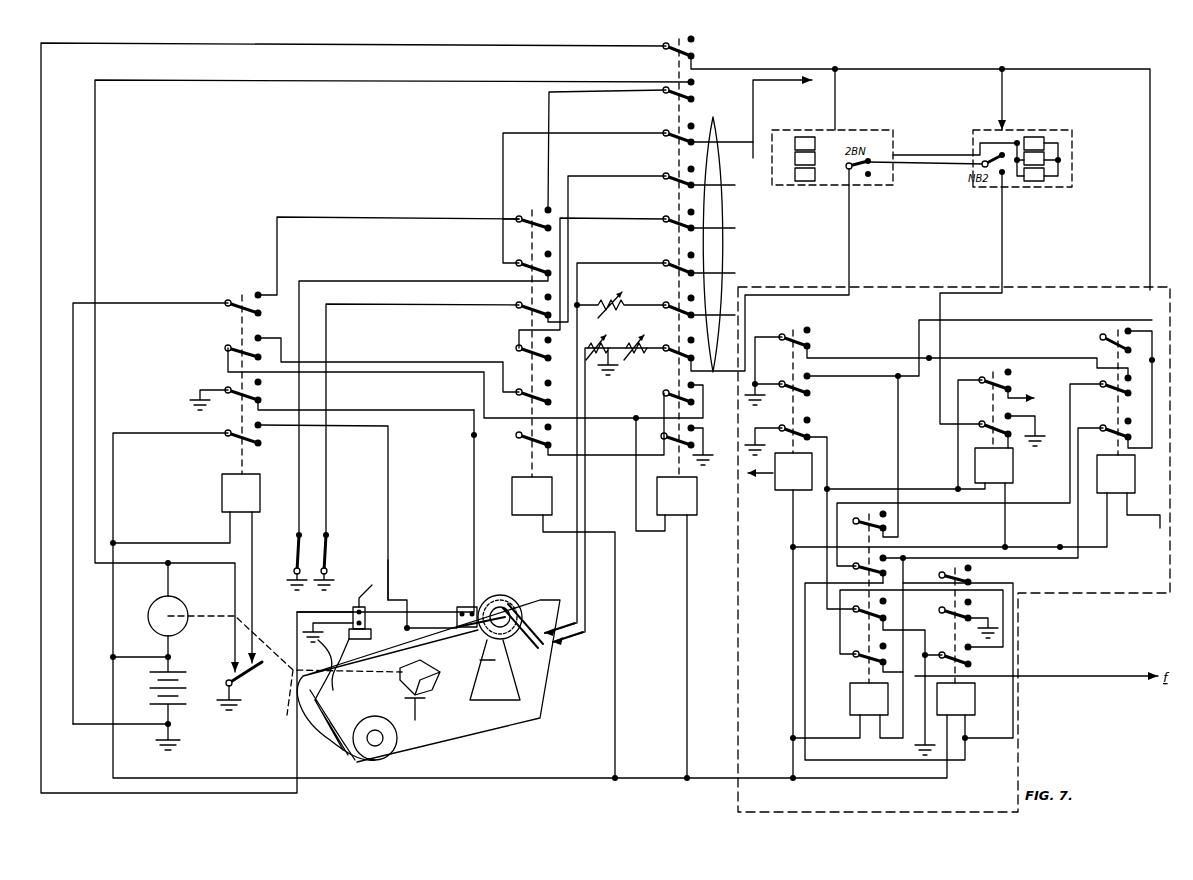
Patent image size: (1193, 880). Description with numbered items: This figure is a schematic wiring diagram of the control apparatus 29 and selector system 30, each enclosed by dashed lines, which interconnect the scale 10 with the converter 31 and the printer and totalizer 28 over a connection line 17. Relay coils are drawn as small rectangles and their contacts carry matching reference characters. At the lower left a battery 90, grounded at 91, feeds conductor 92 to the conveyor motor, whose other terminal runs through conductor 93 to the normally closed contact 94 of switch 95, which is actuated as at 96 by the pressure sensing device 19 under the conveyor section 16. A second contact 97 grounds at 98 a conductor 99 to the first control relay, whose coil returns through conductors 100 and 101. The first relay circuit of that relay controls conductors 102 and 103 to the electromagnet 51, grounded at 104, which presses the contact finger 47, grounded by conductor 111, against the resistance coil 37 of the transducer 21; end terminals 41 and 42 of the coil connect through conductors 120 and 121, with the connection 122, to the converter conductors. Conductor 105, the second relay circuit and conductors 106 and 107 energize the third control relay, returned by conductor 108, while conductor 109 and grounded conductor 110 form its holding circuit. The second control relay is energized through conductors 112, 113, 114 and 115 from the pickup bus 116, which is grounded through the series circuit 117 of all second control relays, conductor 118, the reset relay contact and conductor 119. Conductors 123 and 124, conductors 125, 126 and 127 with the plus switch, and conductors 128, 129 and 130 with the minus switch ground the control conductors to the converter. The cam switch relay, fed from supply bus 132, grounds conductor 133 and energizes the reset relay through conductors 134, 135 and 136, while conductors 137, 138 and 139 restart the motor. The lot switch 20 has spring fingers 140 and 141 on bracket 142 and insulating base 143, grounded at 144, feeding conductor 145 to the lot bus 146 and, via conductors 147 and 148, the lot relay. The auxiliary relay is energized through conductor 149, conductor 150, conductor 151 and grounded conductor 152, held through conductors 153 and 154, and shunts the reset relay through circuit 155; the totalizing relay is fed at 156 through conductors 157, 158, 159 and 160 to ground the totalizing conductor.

The scale 10 is at (515, 598).
The conveyor section 16 is at (330, 755).
The connection line 17 is at (935, 160).
The sensing device 19 is at (420, 696).
The lot switch 20 is at (365, 612).
The transducer 21 is at (530, 620).
The printer and totalizer 28 is at (832, 147).
The control apparatus 29 is at (1056, 288).
The selector system 30 is at (868, 185).
The converter 31 is at (791, 117).
The electrical resistance coil 37 is at (520, 602).
The end terminal 41 is at (495, 670).
The end terminal 42 is at (495, 630).
The contacting finger 47 is at (462, 638).
The electromagnet 51 is at (470, 600).
The battery 90 is at (190, 695).
The ground 91 is at (172, 735).
The conductor 92 is at (165, 650).
The conductor 93 is at (172, 580).
The normally closed contact 94 is at (230, 668).
The switch 95 is at (250, 690).
The actuating connection 96 is at (285, 671).
The second normally closed contact 97 is at (262, 640).
The ground 98 is at (240, 705).
The conductor 99 is at (255, 530).
The conductor 100 is at (200, 543).
The supply conductor 101 is at (113, 585).
The conductor 102 is at (115, 505).
The conductor 103 is at (372, 435).
The ground 104 is at (440, 626).
The conductor 105 is at (205, 388).
The conductor 106 is at (462, 408).
The conductor 107 is at (470, 448).
The conductor 108 is at (618, 622).
The conductor 109 is at (630, 455).
The conductor 110 is at (708, 440).
The conductor 111 is at (395, 595).
The conductor 112 is at (685, 692).
The conductor 113 is at (640, 535).
The conductor 114 is at (365, 345).
The conductor 115 is at (405, 372).
The pickup bus 116 is at (640, 405).
The series circuit 117 is at (810, 292).
The conductor 118 is at (955, 295).
The conductor 119 is at (1025, 451).
The conductor 120 is at (585, 505).
The conductor 121 is at (530, 470).
The connection 122 is at (617, 262).
The conductor 123 is at (590, 215).
The conductor 124 is at (605, 388).
The conductor 125 is at (620, 170).
The conductor 126 is at (465, 310).
The conductor 127 is at (328, 572).
The conductor 128 is at (637, 130).
The conductor 129 is at (385, 280).
The conductor 130 is at (295, 572).
The supply bus 132 is at (790, 712).
The conductor 133 is at (774, 409).
The conductor 134 is at (830, 462).
The conductor 135 is at (915, 468).
The conductor 136 is at (1045, 492).
The conductor 137 is at (423, 215).
The conductor 138 is at (632, 86).
The conductor 139 is at (458, 85).
The spring finger 140 is at (345, 651).
The spring finger 141 is at (370, 598).
The bracket 142 is at (381, 586).
The insulating base 143 is at (336, 670).
The ground 144 is at (335, 700).
The conductor 145 is at (43, 80).
The lot bus 146 is at (808, 62).
The conductor 147 is at (1160, 528).
The conductor 148 is at (1110, 550).
The conductor 149 is at (820, 735).
The conductor 150 is at (875, 636).
The conductor 151 is at (848, 378).
The conductor 152 is at (780, 363).
The conductor 153 is at (1003, 618).
The conductor 154 is at (942, 655).
The circuit 155 is at (827, 562).
The connection 156 is at (878, 778).
The conductor 157 is at (1013, 697).
The conductor 158 is at (952, 508).
The conductor 159 is at (995, 355).
The conductor 160 is at (768, 315).